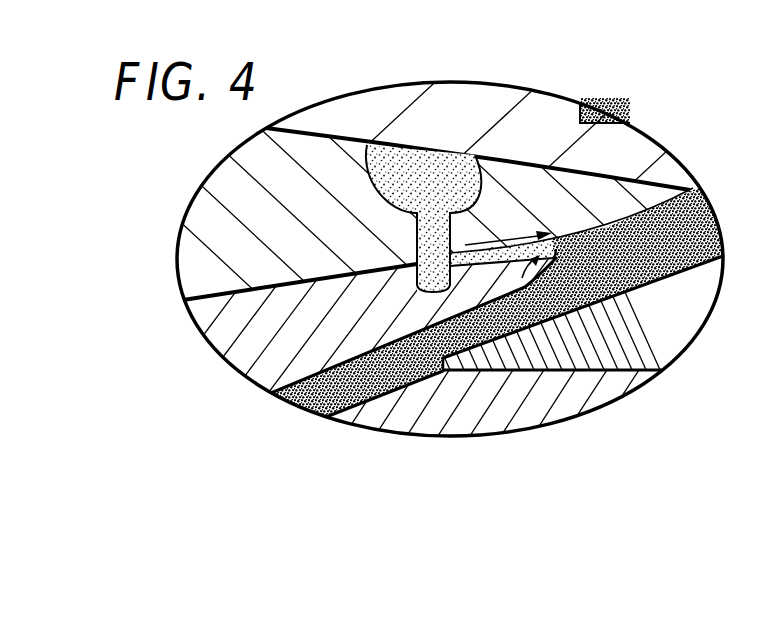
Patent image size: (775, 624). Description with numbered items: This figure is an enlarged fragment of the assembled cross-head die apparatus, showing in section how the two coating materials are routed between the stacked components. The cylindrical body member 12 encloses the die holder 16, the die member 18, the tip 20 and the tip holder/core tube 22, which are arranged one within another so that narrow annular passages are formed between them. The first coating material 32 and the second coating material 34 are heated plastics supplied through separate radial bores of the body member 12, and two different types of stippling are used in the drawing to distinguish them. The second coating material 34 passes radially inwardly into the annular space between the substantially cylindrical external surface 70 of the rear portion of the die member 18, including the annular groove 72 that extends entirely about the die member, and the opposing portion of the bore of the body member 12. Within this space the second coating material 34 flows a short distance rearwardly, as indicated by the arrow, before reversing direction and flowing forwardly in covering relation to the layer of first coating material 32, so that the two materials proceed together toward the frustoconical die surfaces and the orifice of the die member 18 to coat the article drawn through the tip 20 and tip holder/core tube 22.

The cylindrical body member 12 is at (477, 93).
The die holder 16 is at (222, 175).
The die member 18 is at (215, 332).
The tip 20 is at (392, 426).
The tip holder/core tube 22 is at (676, 331).
The first coating material 32 is at (310, 417).
The second coating material 34 is at (273, 400).
The external surface of rear portion of die member 70 is at (603, 212).
The annular groove 72 is at (408, 281).